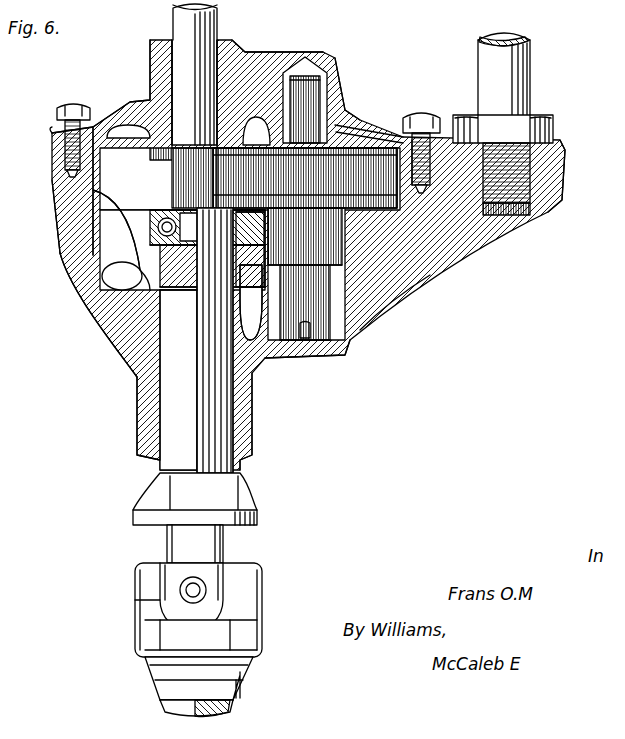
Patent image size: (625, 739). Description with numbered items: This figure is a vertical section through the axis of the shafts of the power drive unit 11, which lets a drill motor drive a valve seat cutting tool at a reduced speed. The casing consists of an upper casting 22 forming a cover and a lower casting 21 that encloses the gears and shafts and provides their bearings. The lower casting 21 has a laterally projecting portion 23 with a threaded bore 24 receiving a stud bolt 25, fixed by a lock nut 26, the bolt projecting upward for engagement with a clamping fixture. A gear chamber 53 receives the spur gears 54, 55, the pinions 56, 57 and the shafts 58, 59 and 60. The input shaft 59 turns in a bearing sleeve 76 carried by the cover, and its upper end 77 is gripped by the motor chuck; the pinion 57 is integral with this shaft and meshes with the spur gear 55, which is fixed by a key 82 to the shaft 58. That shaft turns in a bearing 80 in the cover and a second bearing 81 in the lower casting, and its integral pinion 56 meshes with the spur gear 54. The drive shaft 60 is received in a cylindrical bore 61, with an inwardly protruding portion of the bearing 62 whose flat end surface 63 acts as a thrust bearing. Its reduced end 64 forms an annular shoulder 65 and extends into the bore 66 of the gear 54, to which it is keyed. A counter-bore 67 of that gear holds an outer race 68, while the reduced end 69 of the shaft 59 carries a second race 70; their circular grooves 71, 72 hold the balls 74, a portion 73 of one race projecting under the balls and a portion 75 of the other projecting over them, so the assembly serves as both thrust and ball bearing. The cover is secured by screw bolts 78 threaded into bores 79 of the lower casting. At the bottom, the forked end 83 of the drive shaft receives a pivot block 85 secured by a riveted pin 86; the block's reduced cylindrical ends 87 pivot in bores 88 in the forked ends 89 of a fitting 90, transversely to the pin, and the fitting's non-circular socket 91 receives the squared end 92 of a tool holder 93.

The power drive unit 11 is at (408, 303).
The lower casting 21 is at (455, 232).
The upper casting 22 is at (348, 118).
The laterally projecting portion 23 is at (552, 182).
The threaded bore 24 is at (532, 165).
The stud bolt 25 is at (530, 90).
The lock nut 26 is at (548, 126).
The gear chamber 53 is at (380, 312).
The spur gear 54 is at (68, 183).
The spur gear 55 is at (355, 205).
The pinion 56 is at (332, 248).
The pinion 57 is at (188, 178).
The shaft 58 is at (350, 105).
The shaft 59 is at (220, 100).
The drive shaft 60 is at (228, 398).
The cylindrical bore 61 is at (150, 400).
The inwardly protruding portion of the bearing 62 is at (135, 320).
The flat end surface 63 is at (150, 292).
The reduced end 64 is at (196, 290).
The annular shoulder 65 is at (252, 302).
The bore 66 is at (102, 268).
The counter-bore 67 is at (100, 215).
The outer race 68 is at (100, 247).
The reduced end 69 is at (250, 228).
The second race 70 is at (195, 205).
The circular groove 71 is at (160, 222).
The circular groove 72 is at (176, 248).
The portion of race 73 is at (188, 270).
The balls 74 is at (46, 192).
The portion of race 75 is at (250, 216).
The bearing sleeve 76 is at (150, 78).
The upper end 77 is at (216, 22).
The screw bolts 78 is at (428, 118).
The bores 79 is at (432, 150).
The bearing 80 is at (284, 110).
The second bearing 81 is at (346, 346).
The key 82 is at (378, 130).
The forked end 83 is at (170, 530).
The pivot block 85 is at (255, 514).
The riveted pin 86 is at (206, 592).
The reduced cylindrical ends 87 is at (150, 572).
The bores 88 is at (150, 578).
The forked ends 89 is at (150, 630).
The fitting 90 is at (250, 670).
The non-circular socket 91 is at (170, 680).
The squared end 92 is at (250, 690).
The tool holder 93 is at (165, 708).